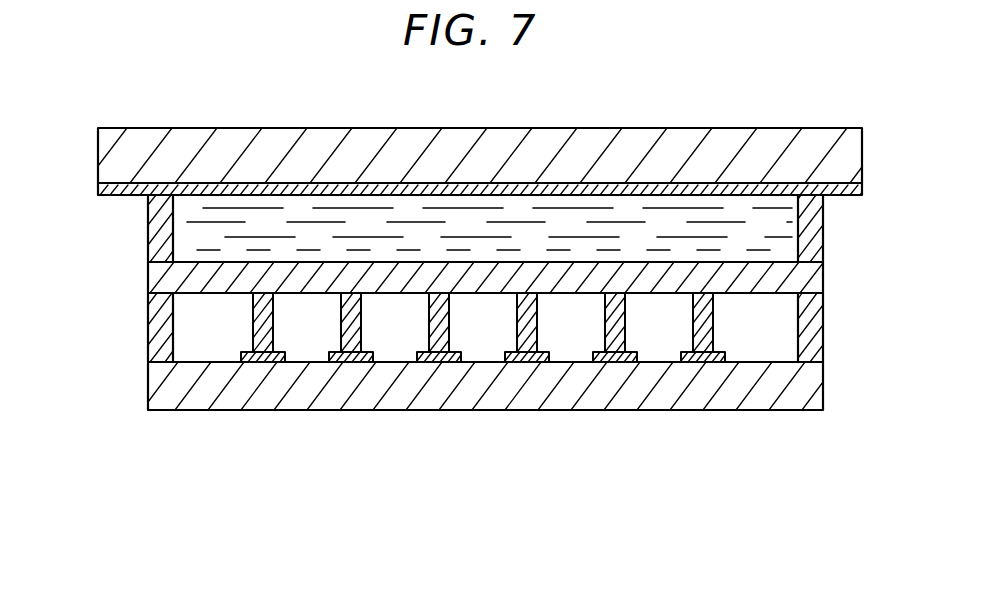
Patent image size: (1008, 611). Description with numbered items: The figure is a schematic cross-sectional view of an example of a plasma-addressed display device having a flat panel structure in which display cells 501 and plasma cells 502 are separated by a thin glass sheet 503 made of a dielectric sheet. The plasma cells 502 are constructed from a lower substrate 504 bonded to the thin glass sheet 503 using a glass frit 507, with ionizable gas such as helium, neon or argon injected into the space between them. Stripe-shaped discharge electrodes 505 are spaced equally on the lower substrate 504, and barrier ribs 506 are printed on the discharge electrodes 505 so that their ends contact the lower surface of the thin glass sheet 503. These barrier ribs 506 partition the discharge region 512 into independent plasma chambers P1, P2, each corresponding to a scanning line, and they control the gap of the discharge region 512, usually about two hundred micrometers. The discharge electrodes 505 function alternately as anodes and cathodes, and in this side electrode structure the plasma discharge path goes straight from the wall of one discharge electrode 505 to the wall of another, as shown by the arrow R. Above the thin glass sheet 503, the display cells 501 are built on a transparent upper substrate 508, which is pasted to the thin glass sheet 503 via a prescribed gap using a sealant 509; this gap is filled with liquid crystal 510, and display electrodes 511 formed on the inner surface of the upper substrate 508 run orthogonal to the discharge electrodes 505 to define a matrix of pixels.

The display cells 501 is at (86, 136).
The plasma cells 502 is at (86, 281).
The thin glass sheet 503 is at (807, 278).
The lower substrate 504 is at (260, 392).
The discharge electrodes 505 is at (645, 357).
The barrier ribs 506 is at (717, 320).
The glass frit 507 is at (823, 330).
The upper substrate 508 is at (745, 145).
The sealant 509 is at (815, 227).
The liquid crystal 510 is at (482, 220).
The display electrodes 511 is at (293, 187).
The discharge region 512 is at (562, 330).
The plasma chamber P1 is at (307, 337).
The plasma chamber P2 is at (390, 337).
The arrow R is at (490, 350).